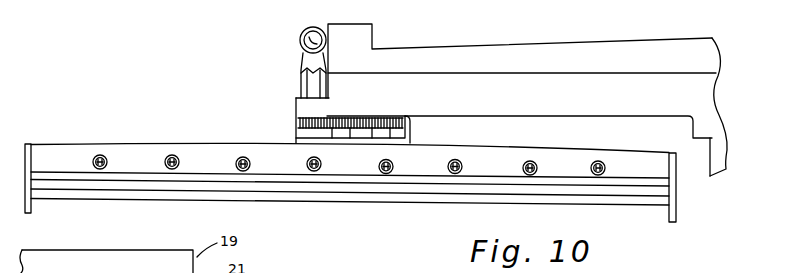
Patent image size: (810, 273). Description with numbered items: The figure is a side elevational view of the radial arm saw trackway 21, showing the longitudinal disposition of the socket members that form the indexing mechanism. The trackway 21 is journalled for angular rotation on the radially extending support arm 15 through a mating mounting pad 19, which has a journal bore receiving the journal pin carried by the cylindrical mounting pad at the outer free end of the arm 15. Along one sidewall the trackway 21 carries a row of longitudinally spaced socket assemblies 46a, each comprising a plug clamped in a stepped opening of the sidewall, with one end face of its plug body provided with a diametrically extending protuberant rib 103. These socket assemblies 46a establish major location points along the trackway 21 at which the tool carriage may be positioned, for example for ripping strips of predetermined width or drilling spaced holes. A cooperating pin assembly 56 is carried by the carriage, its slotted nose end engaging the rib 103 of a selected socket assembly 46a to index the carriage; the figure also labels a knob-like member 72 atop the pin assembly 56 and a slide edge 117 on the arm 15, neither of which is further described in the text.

The support arm 15 is at (493, 48).
The mounting pad 19 is at (297, 138).
The trackway 21 is at (55, 138).
The socket assembly 46a is at (173, 156).
The pin assembly 56 is at (302, 80).
The knob 72 is at (302, 31).
The protuberant rib 103 is at (165, 162).
The slide edge 117 is at (297, 115).